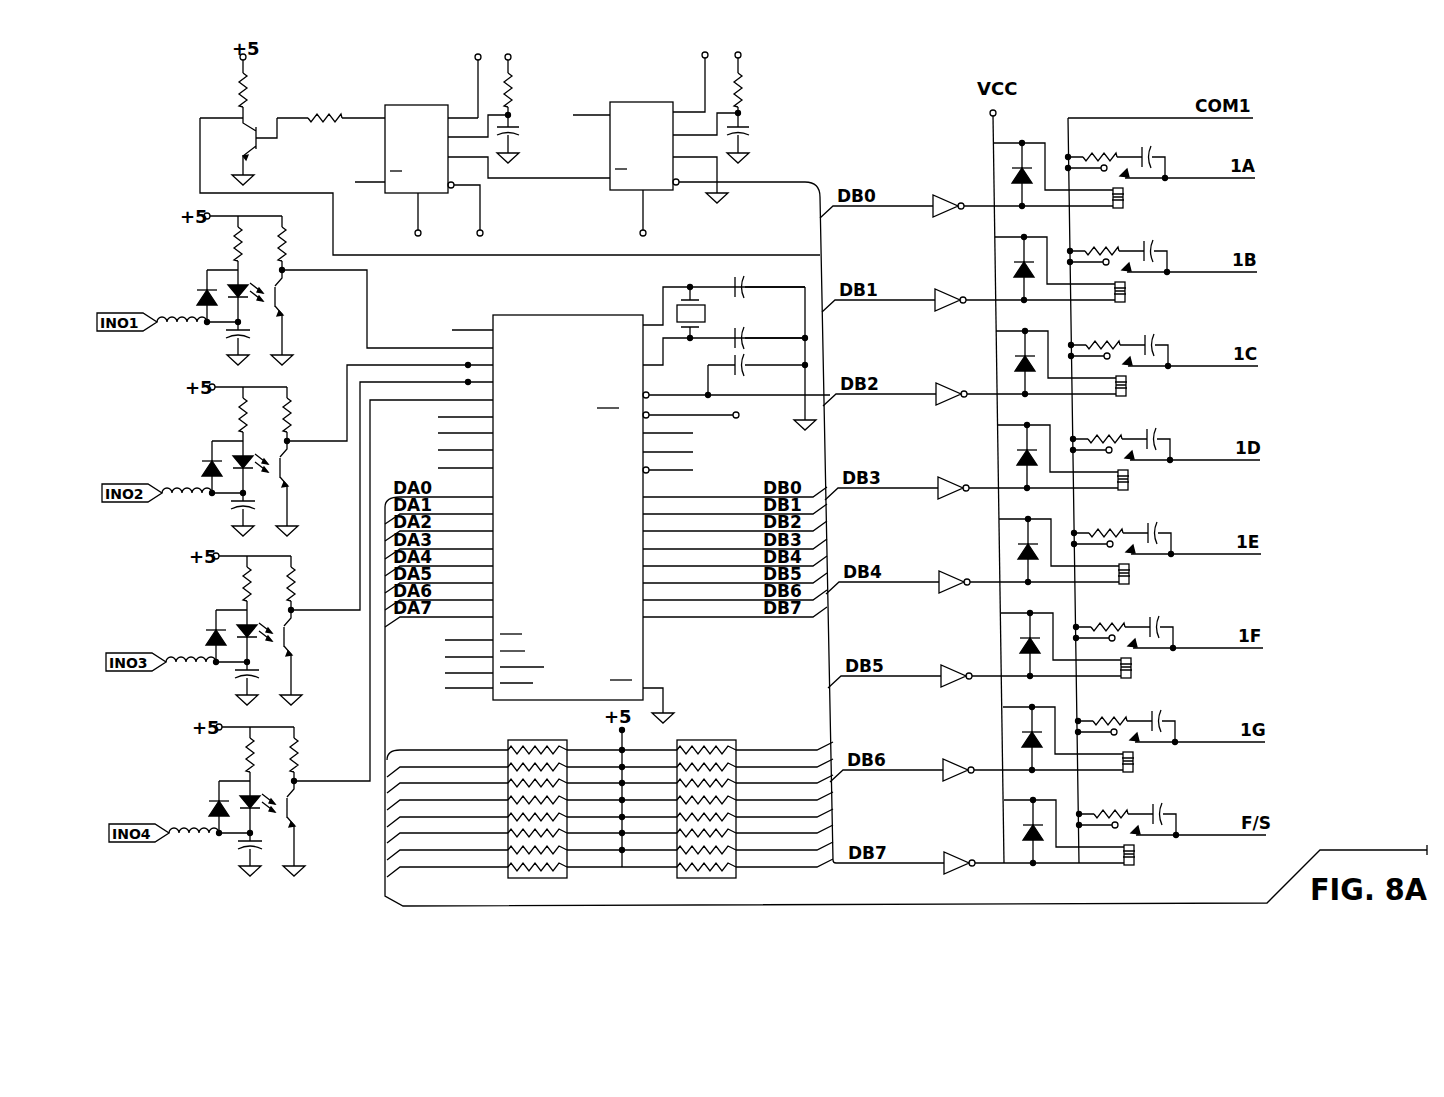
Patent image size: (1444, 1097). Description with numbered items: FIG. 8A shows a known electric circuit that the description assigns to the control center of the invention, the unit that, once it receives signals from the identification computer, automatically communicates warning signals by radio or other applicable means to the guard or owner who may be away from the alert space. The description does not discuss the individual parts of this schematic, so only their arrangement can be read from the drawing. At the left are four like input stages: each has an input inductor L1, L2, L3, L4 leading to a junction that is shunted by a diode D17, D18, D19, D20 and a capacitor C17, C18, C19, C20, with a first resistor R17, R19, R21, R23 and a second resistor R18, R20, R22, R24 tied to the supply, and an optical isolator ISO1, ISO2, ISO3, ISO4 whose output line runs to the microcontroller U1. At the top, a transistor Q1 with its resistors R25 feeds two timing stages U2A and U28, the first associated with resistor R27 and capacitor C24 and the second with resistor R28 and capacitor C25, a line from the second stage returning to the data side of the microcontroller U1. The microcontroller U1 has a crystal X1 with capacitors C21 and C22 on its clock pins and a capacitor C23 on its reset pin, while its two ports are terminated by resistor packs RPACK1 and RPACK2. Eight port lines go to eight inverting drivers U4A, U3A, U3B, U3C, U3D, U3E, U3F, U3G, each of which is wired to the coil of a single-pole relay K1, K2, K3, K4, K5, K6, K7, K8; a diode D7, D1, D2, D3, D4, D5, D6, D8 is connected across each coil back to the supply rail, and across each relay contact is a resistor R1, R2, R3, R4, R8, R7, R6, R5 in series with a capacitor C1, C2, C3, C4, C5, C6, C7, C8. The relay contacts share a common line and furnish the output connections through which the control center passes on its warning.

The transistor C1815 Q1 is at (260, 146).
The resistor R25 is at (312, 100).
The monostable multivibrator 4528 U2A is at (482, 140).
The resistor 470K R27 is at (535, 73).
The capacitor 1U C24 is at (531, 139).
The monostable multivibrator 4528 U28 is at (696, 140).
The resistor 470K R28 is at (763, 72).
The capacitor 1U C25 is at (763, 138).
The resistor 0.5K R17 is at (218, 243).
The resistor 2K R18 is at (304, 243).
The diode IN4002 D17 is at (191, 292).
The optocoupler PC817 ISO1 is at (281, 317).
The inductor 470UH L1 is at (187, 324).
The capacitor 0.047U C17 is at (230, 341).
The resistor 0.5K R19 is at (223, 414).
The resistor 2K R20 is at (309, 414).
The diode IN4002 D18 is at (196, 463).
The optocoupler PC817 ISO2 is at (286, 488).
The inductor 470UH L2 is at (192, 495).
The capacitor 0.047U C18 is at (235, 512).
The resistor 0.5K R21 is at (227, 583).
The resistor 2K R22 is at (313, 583).
The diode IN4002 D19 is at (200, 632).
The optocoupler PC817 ISO3 is at (290, 657).
The inductor 470UH L3 is at (196, 664).
The capacitor 0.047U C19 is at (239, 681).
The resistor 0.5K R23 is at (230, 754).
The resistor 2K R24 is at (316, 754).
The diode IN4002 D20 is at (203, 803).
The optocoupler PC817 ISO4 is at (293, 828).
The inductor 470UH L4 is at (199, 835).
The capacitor 0.047U C20 is at (242, 852).
The microcontroller 8748 U1 is at (634, 506).
The crystal 6MHZ X1 is at (735, 313).
The capacitor 20P C21 is at (751, 281).
The capacitor 20P C22 is at (753, 333).
The capacitor 1U C23 is at (753, 371).
The resistor pack RPACK1 is at (727, 810).
The resistor pack RPACK2 is at (504, 811).
The driver 2003 U4A is at (996, 196).
The driver 2003 U3A is at (998, 290).
The driver 2003 U3B is at (999, 384).
The driver 2003 U3C is at (1001, 478).
The driver 2003 U3D is at (1002, 572).
The driver 2003 U3E is at (1004, 666).
The driver 2003 U3F is at (1006, 760).
The driver 2003 U3G is at (1007, 853).
The diode IN4002 D7 is at (1020, 167).
The diode D1 is at (1022, 261).
The diode D2 is at (1023, 355).
The diode D3 is at (1025, 449).
The diode D4 is at (1026, 543).
The diode D5 is at (1028, 637).
The diode D6 is at (1030, 731).
The diode D8 is at (1031, 824).
The resistor 0.1K R1 is at (1104, 143).
The resistor 0.1K R2 is at (1106, 237).
The resistor 0.1K R3 is at (1107, 331).
The resistor 0.1K R4 is at (1109, 425).
The resistor 0.1K R5 is at (1115, 800).
The resistor 0.1K R6 is at (1114, 707).
The resistor 0.1K R7 is at (1112, 613).
The resistor 0.1K R8 is at (1110, 519).
The capacitor 0.01u C1 is at (1179, 153).
The capacitor 0.01u C2 is at (1181, 247).
The capacitor 0.01 C3 is at (1176, 341).
The capacitor 0.01 C4 is at (1178, 435).
The capacitor 0.01 C5 is at (1179, 529).
The capacitor 0.01 C6 is at (1181, 623).
The capacitor 0.01 C7 is at (1183, 717).
The capacitor 0.01 C8 is at (1184, 810).
The relay SPST K1 is at (1162, 193).
The relay SPST K2 is at (1164, 287).
The relay SPST K3 is at (1165, 381).
The relay SPST K4 is at (1167, 475).
The relay SPST K5 is at (1168, 569).
The relay SPST K6 is at (1170, 663).
The relay SPST K7 is at (1172, 757).
The relay SPST K8 is at (1173, 850).